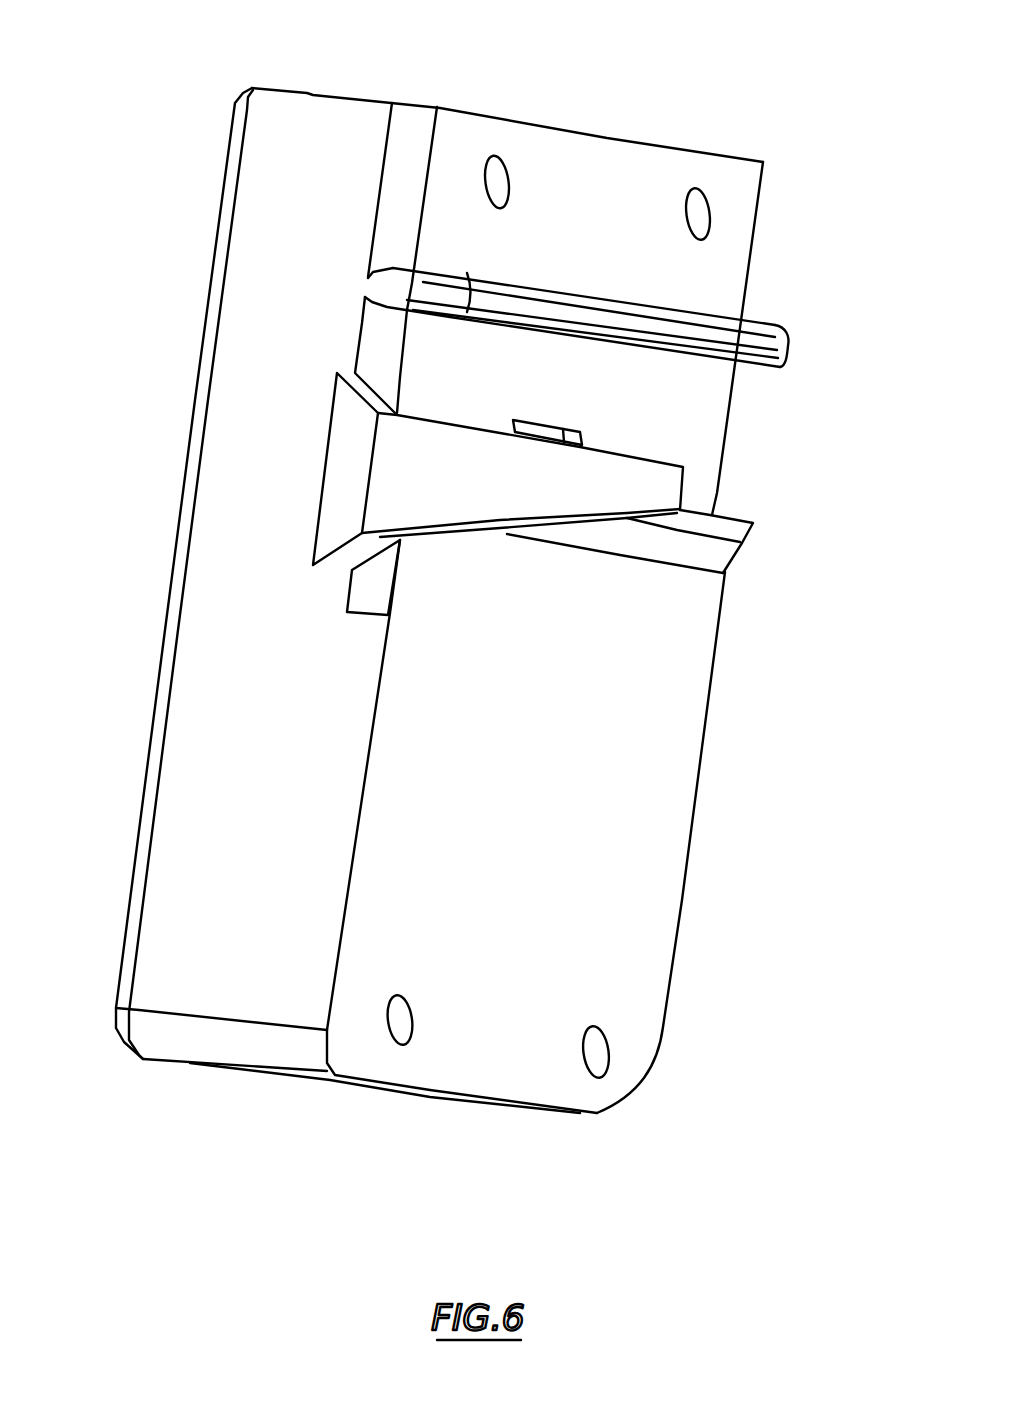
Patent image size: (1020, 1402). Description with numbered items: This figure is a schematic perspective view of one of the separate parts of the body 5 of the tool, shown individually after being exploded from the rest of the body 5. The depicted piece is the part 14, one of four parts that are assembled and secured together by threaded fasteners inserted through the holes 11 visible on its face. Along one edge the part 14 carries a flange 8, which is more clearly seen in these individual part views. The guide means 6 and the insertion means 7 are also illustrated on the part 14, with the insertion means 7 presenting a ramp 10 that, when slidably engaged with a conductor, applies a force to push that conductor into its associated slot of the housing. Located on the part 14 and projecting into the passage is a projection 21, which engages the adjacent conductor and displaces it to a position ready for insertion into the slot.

The body 5 is at (733, 110).
The guide means 6 is at (303, 426).
The insertion means 7 is at (332, 564).
The flange 8 is at (788, 339).
The ramp 10 is at (694, 509).
The hole 11 is at (698, 212).
The part 14 is at (229, 764).
The projection 21 is at (562, 428).